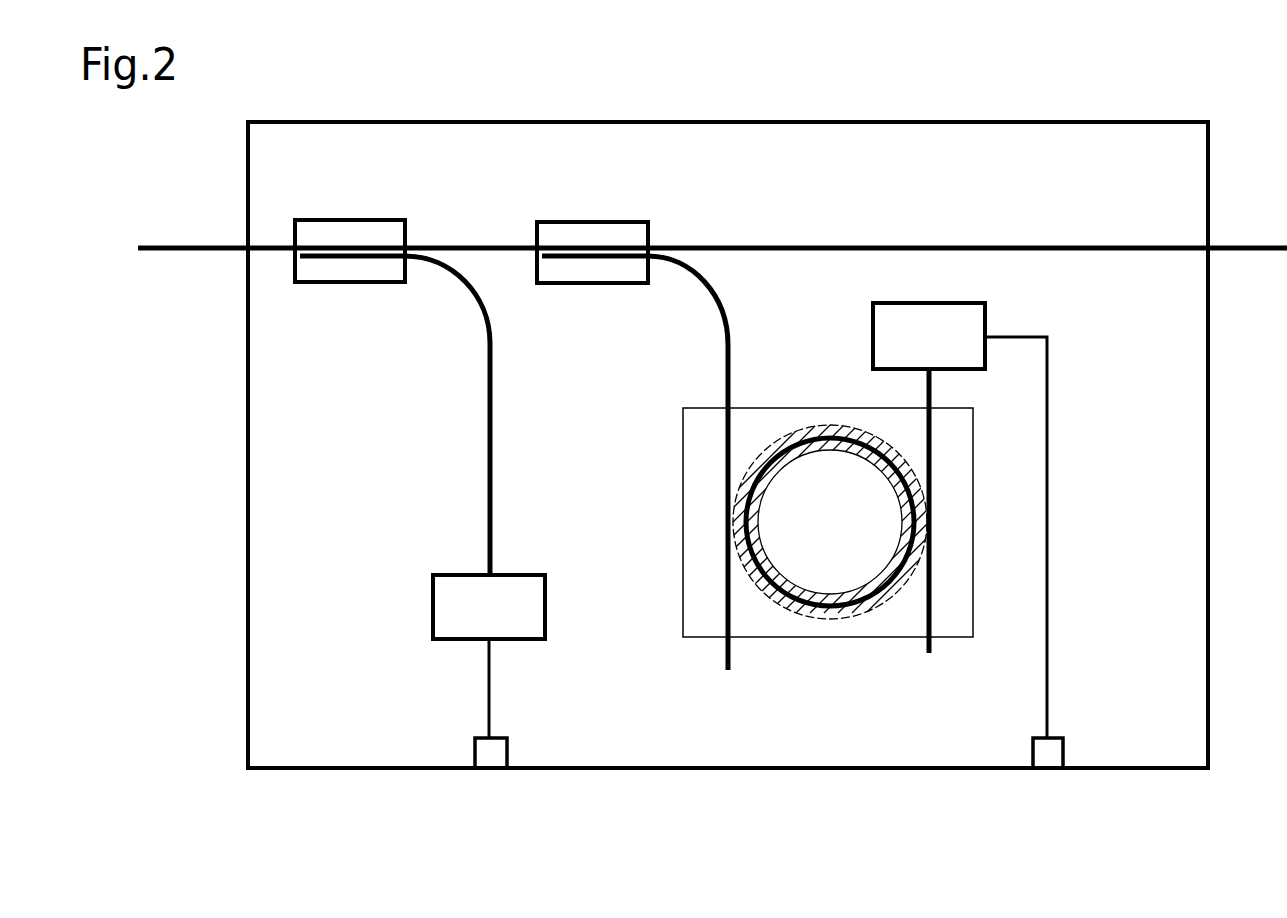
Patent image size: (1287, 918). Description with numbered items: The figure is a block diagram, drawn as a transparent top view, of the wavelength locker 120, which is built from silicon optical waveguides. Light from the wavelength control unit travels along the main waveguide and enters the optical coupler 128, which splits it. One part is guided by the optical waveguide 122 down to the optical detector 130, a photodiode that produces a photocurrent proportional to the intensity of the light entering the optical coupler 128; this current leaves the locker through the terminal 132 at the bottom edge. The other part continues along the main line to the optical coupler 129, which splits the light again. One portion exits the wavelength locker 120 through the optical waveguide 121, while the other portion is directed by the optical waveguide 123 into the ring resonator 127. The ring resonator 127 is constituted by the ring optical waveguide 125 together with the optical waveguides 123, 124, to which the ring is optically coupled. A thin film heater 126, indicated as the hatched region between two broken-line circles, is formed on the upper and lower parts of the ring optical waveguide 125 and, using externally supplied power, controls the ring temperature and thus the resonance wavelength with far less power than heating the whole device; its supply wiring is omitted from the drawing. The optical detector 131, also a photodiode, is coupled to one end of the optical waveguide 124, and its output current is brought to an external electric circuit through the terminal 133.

The wavelength locker 120 is at (767, 87).
The optical waveguide 121 is at (1012, 246).
The optical waveguide 122 is at (487, 382).
The optical waveguide 123 is at (725, 357).
The optical waveguide 124 is at (931, 653).
The ring optical waveguide 125 is at (770, 600).
The heater 126 is at (882, 605).
The ring resonator 127 is at (683, 528).
The optical coupler 128 is at (355, 219).
The optical coupler 129 is at (590, 221).
The optical detector 130 is at (433, 607).
The optical detector 131 is at (873, 334).
The terminal 132 is at (490, 771).
The terminal 133 is at (1047, 771).